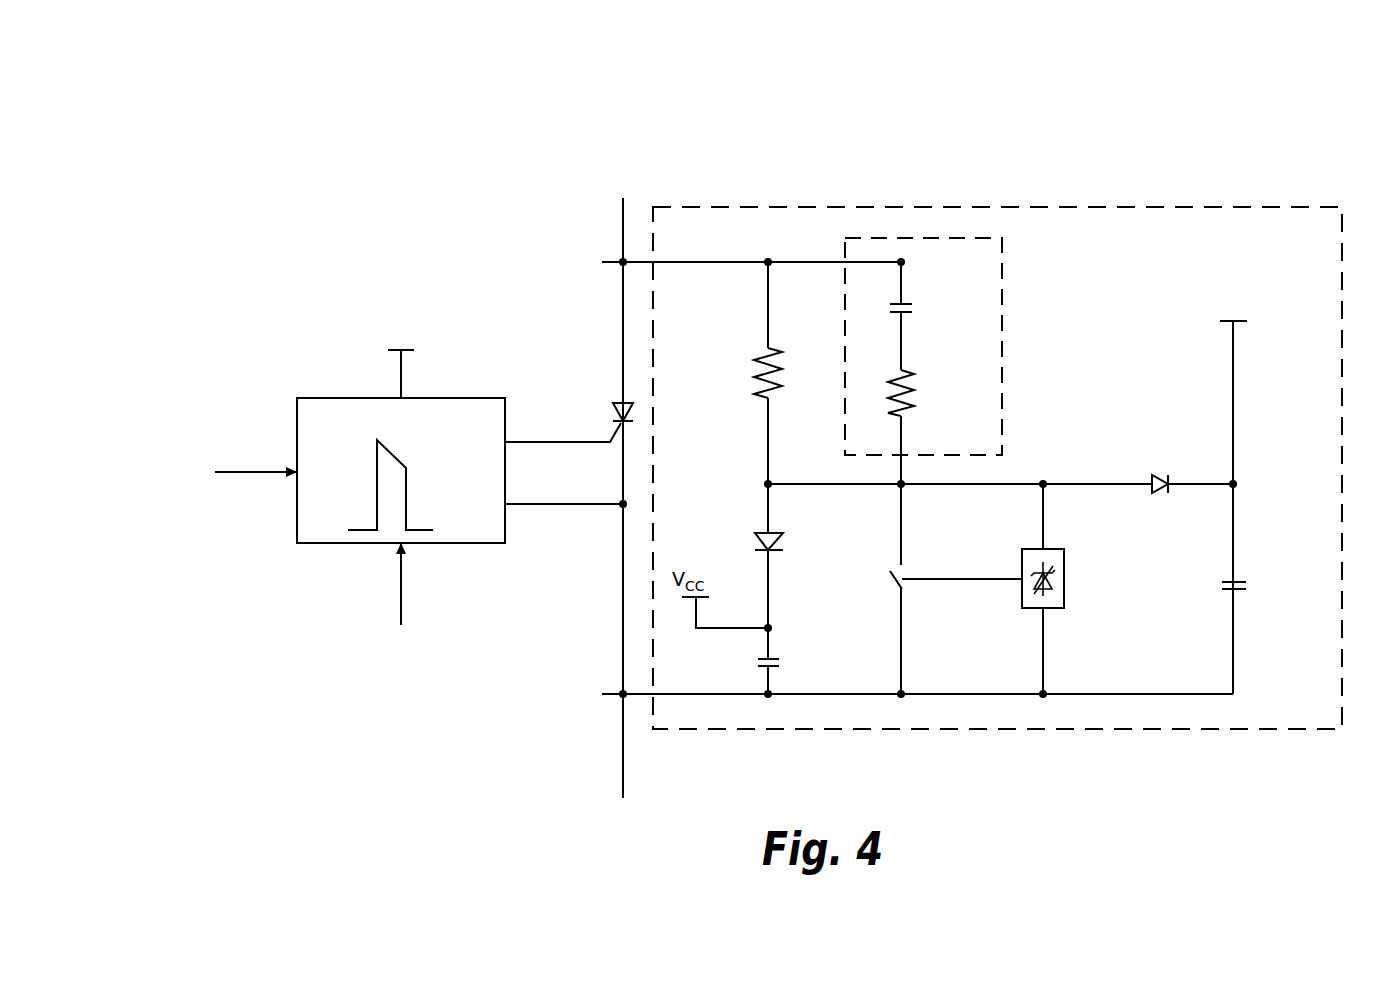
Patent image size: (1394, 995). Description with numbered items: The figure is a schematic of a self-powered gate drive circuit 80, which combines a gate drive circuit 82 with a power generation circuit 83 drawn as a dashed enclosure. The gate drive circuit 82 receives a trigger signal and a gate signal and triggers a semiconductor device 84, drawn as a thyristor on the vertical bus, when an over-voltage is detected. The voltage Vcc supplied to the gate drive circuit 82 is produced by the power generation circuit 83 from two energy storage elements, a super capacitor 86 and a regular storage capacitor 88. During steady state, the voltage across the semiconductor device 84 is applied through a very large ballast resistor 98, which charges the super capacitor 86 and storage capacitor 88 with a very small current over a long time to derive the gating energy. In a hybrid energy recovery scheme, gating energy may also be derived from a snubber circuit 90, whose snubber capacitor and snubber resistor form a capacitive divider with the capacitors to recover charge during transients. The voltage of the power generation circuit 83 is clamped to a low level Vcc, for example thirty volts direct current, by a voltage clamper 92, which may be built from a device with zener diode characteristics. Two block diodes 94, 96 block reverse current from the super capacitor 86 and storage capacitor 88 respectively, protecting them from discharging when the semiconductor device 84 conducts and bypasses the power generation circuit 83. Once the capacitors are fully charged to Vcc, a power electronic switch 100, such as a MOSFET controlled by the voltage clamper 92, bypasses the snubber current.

The self-powered gate drive circuit 80 is at (1343, 117).
The gate drive circuit 82 is at (297, 398).
The power generation circuit 83 is at (1131, 208).
The semiconductor device 84 is at (611, 404).
The super capacitor 86 is at (764, 660).
The storage capacitor 88 is at (1231, 582).
The snubber circuit 90 is at (1002, 265).
The voltage clamper 92 is at (1064, 606).
The block diode 94 is at (758, 536).
The block diode 96 is at (1151, 481).
The ballast resistor 98 is at (760, 361).
The power electronic switch 100 is at (895, 576).